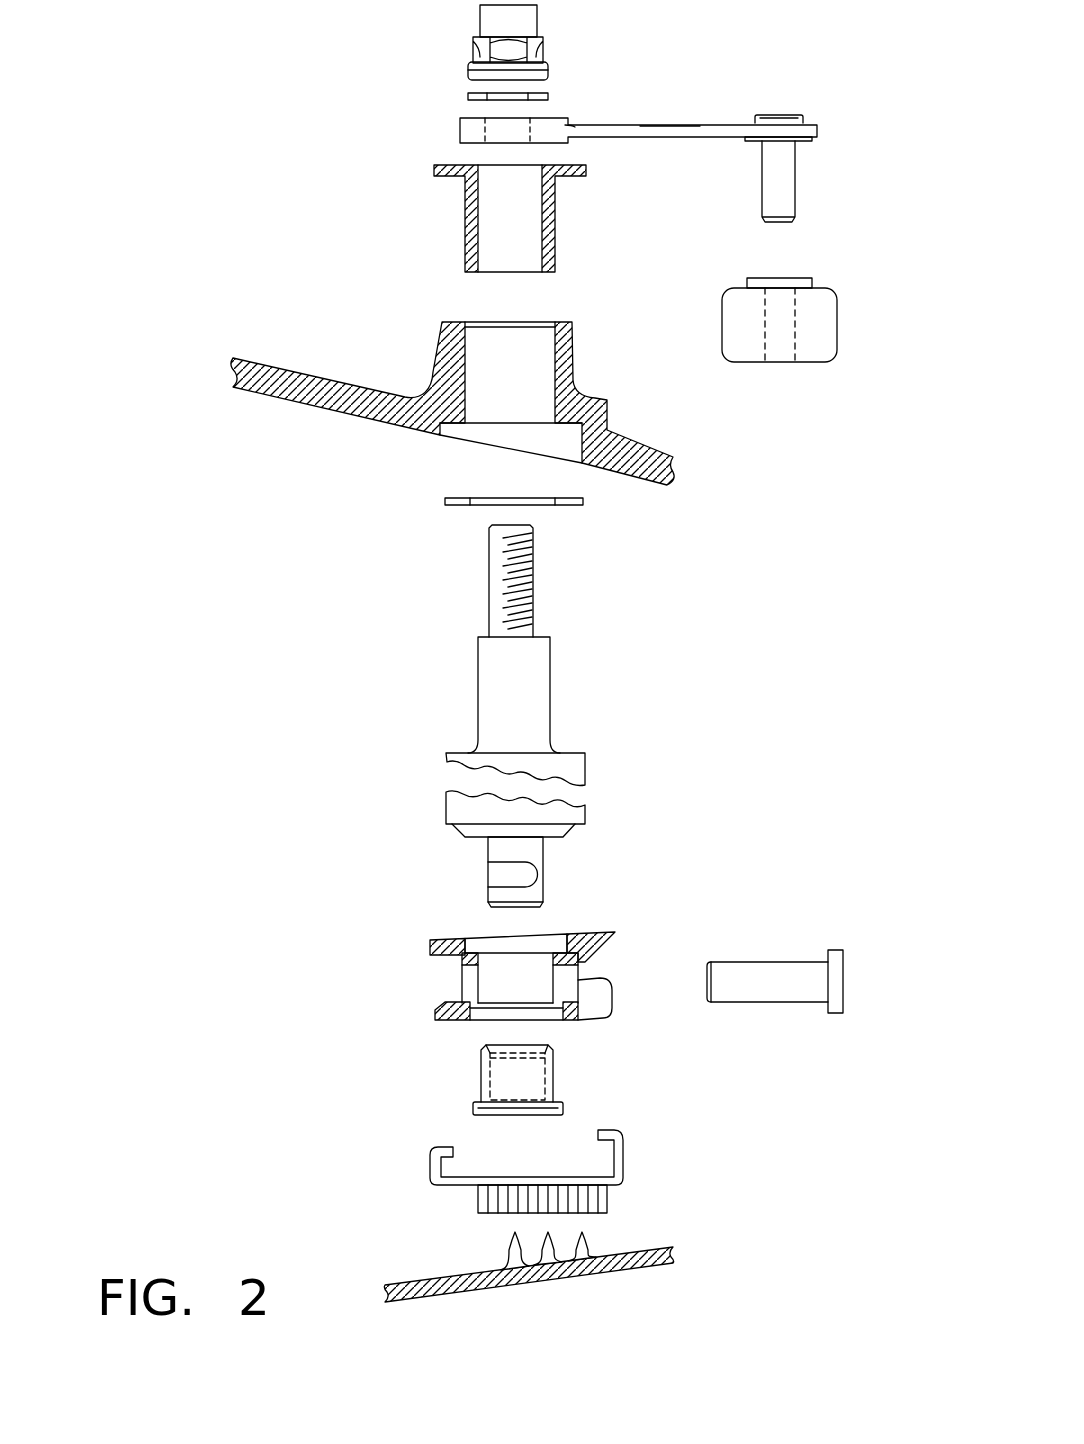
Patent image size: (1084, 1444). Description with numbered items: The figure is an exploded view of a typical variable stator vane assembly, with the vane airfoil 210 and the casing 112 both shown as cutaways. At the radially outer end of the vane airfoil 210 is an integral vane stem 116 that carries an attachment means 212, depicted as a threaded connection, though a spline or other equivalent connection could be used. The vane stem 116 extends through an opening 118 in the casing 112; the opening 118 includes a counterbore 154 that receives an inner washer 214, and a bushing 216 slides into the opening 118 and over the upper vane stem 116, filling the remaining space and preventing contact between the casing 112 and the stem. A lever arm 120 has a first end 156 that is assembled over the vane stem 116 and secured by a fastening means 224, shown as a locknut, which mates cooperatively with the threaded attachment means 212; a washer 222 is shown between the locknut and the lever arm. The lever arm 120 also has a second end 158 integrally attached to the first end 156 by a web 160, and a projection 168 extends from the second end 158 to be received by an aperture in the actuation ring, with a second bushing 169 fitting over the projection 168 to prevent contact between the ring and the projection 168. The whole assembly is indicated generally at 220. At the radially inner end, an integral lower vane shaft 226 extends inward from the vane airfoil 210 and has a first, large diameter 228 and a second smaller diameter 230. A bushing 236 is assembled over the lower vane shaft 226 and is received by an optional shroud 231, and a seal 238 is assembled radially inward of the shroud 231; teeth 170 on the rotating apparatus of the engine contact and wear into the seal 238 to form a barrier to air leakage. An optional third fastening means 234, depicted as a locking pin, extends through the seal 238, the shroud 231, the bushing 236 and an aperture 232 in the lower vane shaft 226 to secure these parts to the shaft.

The casing 112 is at (460, 400).
The vane stem 116 is at (463, 655).
The opening 118 is at (535, 335).
The lever arm 120 is at (470, 136).
The counterbore 154 is at (472, 433).
The first end 156 is at (550, 118).
The second end 158 is at (829, 146).
The web 160 is at (652, 125).
The projection 168 is at (797, 188).
The second bushing 169 is at (815, 270).
The teeth 170 is at (585, 1262).
The vane airfoil 210 is at (446, 756).
The attachment means 212 is at (489, 568).
The inner washer 214 is at (445, 502).
The bushing 216 is at (465, 222).
The fastener assembly 220 is at (252, 265).
The lock washer 222 is at (468, 96).
The fastening means 224 is at (478, 26).
The lower vane shaft 226 is at (545, 862).
The first, large diameter 228 is at (462, 835).
The second smaller diameter 230 is at (545, 903).
The shroud 231 is at (437, 1000).
The aperture 232 is at (490, 873).
The third fastening means 234 is at (752, 962).
The bushing 236 is at (480, 1072).
The seal 238 is at (622, 1147).